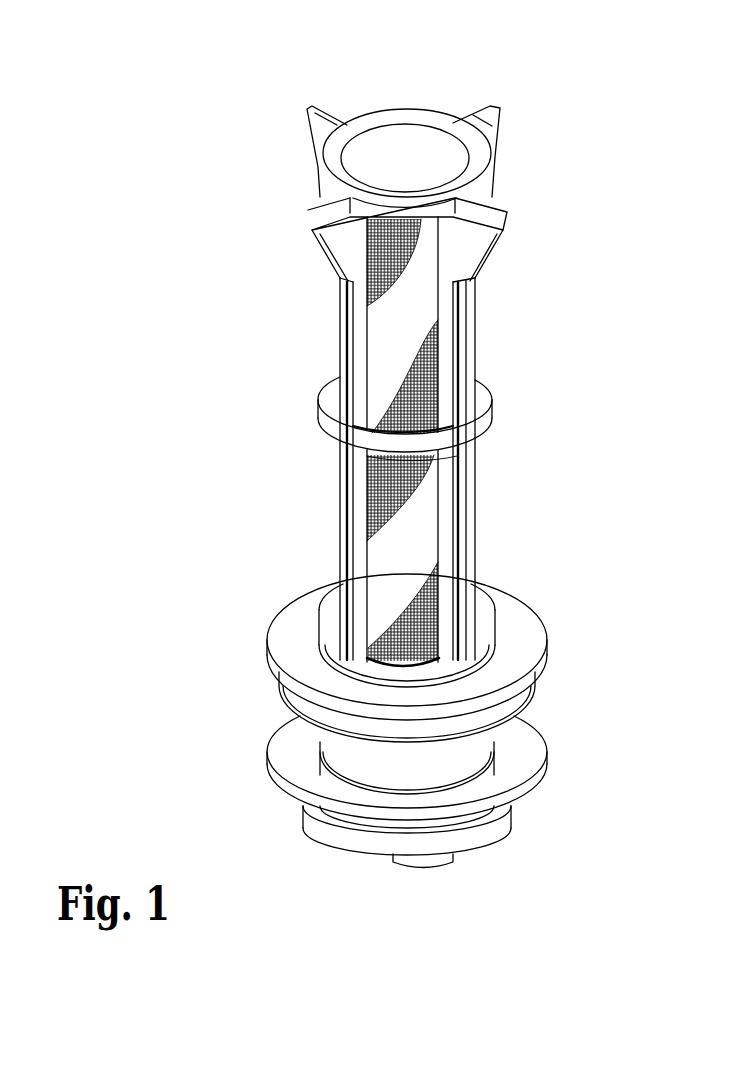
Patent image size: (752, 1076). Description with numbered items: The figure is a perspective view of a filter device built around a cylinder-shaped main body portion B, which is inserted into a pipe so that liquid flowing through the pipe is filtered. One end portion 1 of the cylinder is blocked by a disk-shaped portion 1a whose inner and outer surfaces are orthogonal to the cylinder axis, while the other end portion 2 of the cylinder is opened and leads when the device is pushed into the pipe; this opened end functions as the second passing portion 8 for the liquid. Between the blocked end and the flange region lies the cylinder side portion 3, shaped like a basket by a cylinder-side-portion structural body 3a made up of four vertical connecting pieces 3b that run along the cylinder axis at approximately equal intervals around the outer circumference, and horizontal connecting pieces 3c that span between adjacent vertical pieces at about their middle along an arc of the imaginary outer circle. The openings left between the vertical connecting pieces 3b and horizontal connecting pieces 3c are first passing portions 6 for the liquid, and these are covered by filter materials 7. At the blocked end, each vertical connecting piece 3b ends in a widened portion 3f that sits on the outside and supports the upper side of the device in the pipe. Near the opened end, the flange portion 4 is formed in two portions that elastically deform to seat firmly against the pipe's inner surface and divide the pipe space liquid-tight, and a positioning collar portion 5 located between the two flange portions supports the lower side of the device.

The one end portion of the cylinder 1 is at (421, 148).
The disk-shaped portion 1a is at (380, 141).
The other end portion of the cylinder 2 is at (448, 853).
The cylinder side portion 3 is at (383, 353).
The cylinder-side-portion structural body 3a is at (467, 522).
The vertical connecting piece 3b is at (350, 505).
The horizontal connecting piece 3c is at (318, 417).
The widened portion 3f is at (308, 123).
The flange portion 4 is at (548, 645).
The positioning collar portion 5 is at (535, 701).
The first passing portion 6 is at (422, 320).
The filter material 7 is at (387, 312).
The second passing portion 8 is at (398, 858).
The main body portion B is at (465, 367).